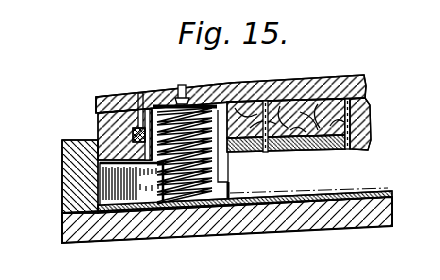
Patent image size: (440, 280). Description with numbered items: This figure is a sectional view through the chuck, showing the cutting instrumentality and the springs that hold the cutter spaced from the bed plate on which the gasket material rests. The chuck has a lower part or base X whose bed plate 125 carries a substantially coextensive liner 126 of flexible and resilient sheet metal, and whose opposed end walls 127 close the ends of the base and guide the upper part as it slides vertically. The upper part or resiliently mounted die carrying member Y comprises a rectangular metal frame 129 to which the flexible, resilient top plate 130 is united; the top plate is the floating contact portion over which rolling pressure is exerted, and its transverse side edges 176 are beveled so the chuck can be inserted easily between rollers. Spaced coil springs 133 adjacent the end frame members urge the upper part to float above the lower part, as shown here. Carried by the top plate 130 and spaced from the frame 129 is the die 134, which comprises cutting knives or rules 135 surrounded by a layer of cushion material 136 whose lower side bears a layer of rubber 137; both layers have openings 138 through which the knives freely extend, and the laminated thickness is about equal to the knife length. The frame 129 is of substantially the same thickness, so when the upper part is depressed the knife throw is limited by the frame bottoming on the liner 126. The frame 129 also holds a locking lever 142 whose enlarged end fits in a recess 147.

The bed plate 125 is at (342, 225).
The liner or plate of flexible and resilient sheet metal 126 is at (280, 197).
The end wall 127 is at (70, 200).
The lower part or base X is at (68, 178).
The upper part or resiliently mounted die carrying member Y is at (98, 113).
The rectangular metal frame 129 is at (98, 132).
The top plate or die carrying member 130 is at (338, 78).
The transverse side edge 176 is at (107, 95).
The recess 147 is at (141, 93).
The locking lever 142 is at (137, 142).
The coil spring 133 is at (187, 192).
The die 134 is at (282, 103).
The layer of rubber 137 is at (328, 152).
The opening 138 is at (263, 151).
The cutting knife or rule 135 is at (348, 150).
The layer of cushion material 136 is at (363, 118).